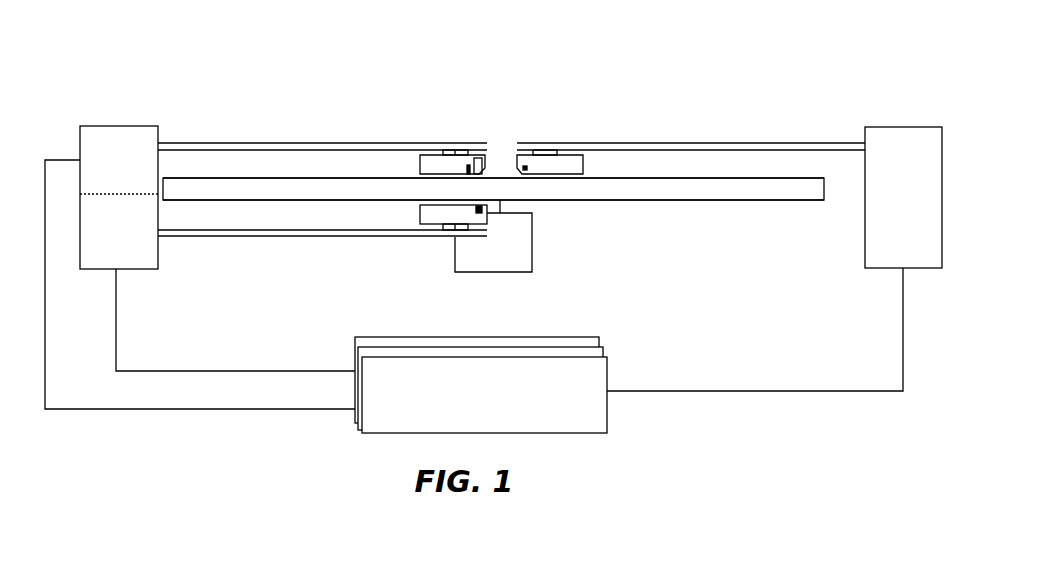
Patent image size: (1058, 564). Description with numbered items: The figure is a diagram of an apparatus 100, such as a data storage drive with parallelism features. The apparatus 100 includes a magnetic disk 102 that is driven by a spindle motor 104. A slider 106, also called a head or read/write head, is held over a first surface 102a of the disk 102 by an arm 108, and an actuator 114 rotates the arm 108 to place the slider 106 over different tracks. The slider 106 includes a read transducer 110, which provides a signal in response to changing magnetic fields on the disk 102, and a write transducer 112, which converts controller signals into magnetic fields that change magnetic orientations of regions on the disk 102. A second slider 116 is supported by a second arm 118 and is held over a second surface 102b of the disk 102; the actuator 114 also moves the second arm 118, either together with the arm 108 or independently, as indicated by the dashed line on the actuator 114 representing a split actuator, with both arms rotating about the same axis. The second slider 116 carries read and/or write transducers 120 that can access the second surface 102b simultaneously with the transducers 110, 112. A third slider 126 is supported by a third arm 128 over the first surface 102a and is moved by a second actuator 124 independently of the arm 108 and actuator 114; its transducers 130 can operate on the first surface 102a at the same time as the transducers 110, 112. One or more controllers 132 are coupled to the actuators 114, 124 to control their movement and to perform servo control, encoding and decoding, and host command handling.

The apparatus 100 is at (641, 62).
The magnetic disk 102 is at (783, 192).
The first surface 102a is at (673, 178).
The second surface 102b is at (702, 200).
The spindle motor 104 is at (470, 272).
The slider 106 is at (432, 162).
The arm 108 is at (300, 143).
The read transducer 110 is at (482, 158).
The write transducer 112 is at (468, 165).
The actuator 114 is at (108, 128).
The second slider 116 is at (432, 222).
The second arm 118 is at (286, 237).
The read and/or write transducers 120 is at (483, 212).
The second actuator 124 is at (893, 127).
The third slider 126 is at (550, 160).
The third arm 128 is at (703, 143).
The read and/or write transducers 130 is at (527, 168).
The controllers 132 is at (562, 348).